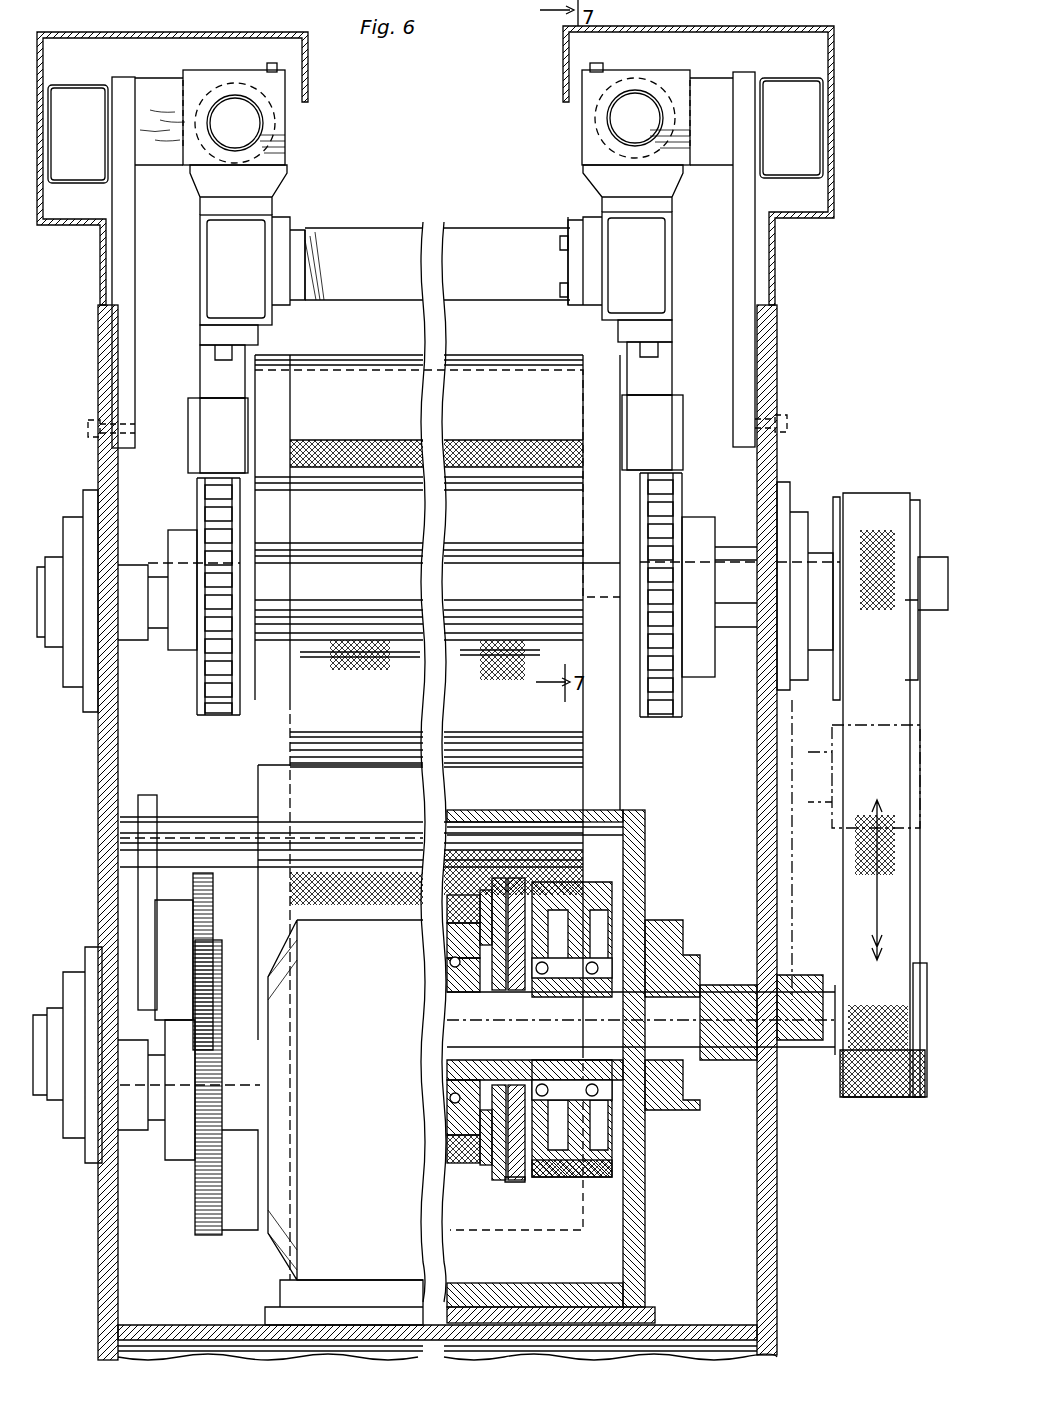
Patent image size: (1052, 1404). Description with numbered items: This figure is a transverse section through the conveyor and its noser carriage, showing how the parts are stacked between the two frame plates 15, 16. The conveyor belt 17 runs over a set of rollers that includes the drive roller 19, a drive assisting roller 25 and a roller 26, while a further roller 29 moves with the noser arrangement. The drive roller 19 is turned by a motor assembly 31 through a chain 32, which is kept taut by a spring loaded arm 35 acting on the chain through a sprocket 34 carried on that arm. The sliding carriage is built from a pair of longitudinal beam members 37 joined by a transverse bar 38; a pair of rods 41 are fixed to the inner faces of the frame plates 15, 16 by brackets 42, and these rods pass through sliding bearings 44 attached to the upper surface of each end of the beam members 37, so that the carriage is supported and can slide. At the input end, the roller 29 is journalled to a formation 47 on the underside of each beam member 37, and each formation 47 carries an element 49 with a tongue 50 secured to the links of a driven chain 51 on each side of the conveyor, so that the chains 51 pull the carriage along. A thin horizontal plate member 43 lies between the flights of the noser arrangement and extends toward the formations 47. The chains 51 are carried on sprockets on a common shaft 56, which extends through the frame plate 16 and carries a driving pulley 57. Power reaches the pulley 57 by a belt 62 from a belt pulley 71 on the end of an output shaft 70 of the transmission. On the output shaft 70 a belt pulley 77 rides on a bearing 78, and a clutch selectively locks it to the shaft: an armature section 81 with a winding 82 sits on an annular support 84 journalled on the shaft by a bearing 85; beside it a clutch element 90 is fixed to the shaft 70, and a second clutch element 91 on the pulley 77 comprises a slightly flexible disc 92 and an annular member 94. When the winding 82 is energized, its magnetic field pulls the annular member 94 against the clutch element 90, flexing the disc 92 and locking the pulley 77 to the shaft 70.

The frame plate 15 is at (100, 1255).
The frame plate 16 is at (770, 1203).
The belt 17 is at (527, 395).
The drive roller 19 is at (262, 895).
The drive assisting roller 25 is at (268, 795).
The roller 26 is at (600, 530).
The roller 29 is at (272, 375).
The motor assembly 31 is at (262, 1256).
The chain 32 is at (200, 1192).
The sprocket 34 is at (195, 928).
The spring loaded arm 35 is at (143, 945).
The longitudinal beam member 37 is at (200, 283).
The transverse bar 38 is at (446, 228).
The rod 41 is at (245, 117).
The bracket 42 is at (168, 155).
The horizontal plate member 43 is at (470, 365).
The sliding bearing 44 is at (288, 172).
The formation 47 is at (210, 383).
The element 49 is at (210, 440).
The tongue 50 is at (200, 480).
The driven chain 51 is at (205, 703).
The shaft 56 is at (320, 630).
The driving pulley 57 is at (920, 510).
The belt 62 is at (900, 905).
The output shaft 70 is at (720, 1000).
The belt pulley 71 is at (915, 960).
The belt pulley 77 is at (625, 893).
The bearing 78 is at (640, 940).
The armature section 81 is at (456, 880).
The winding 82 is at (470, 890).
The annular support 84 is at (450, 940).
The bearing 85 is at (450, 988).
The clutch element 90 is at (495, 890).
The second clutch element 91 is at (515, 880).
The flexible disc 92 is at (533, 891).
The annular member 94 is at (518, 1183).